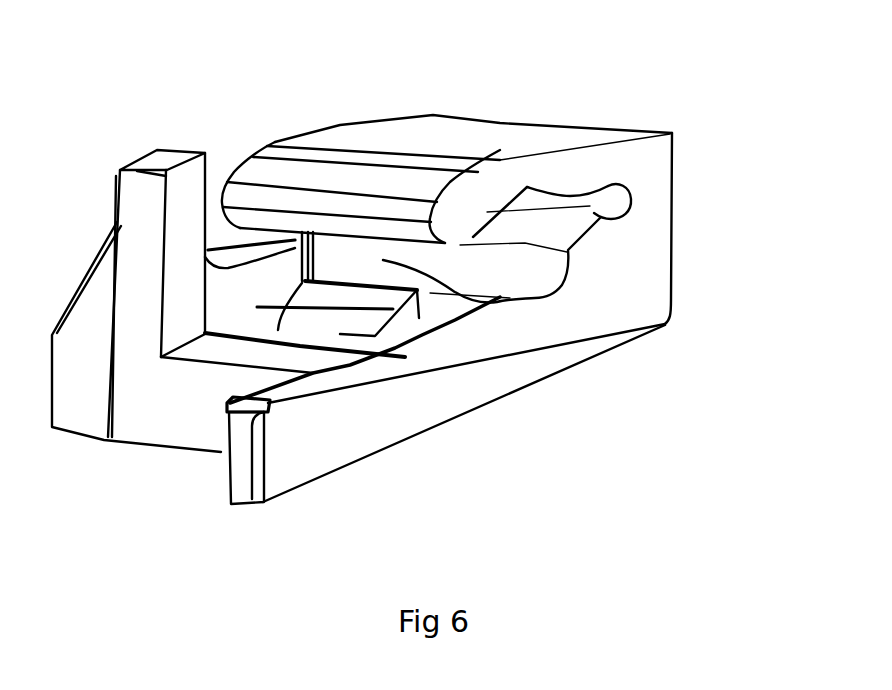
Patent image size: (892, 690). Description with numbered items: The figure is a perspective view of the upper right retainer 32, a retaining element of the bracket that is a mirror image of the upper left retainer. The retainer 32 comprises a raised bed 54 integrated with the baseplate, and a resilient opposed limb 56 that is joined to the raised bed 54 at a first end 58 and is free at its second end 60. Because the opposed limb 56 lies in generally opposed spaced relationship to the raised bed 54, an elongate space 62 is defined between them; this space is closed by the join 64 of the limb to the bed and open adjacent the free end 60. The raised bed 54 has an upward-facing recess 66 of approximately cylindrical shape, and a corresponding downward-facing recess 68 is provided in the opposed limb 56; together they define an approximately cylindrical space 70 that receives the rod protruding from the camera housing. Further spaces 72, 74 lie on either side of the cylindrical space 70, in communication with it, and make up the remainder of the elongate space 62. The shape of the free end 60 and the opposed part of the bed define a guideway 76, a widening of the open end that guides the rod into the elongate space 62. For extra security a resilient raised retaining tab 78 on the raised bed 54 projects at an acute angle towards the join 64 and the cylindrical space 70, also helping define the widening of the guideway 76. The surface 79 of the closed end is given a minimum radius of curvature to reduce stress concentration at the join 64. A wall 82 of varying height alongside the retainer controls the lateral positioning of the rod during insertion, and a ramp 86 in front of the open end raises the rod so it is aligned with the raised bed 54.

The upper right retainer 32 is at (262, 73).
The raised bed 54 is at (502, 366).
The opposed limb 56 is at (574, 168).
The first end 58 is at (657, 160).
The free end 60 is at (327, 200).
The elongate space 62 is at (537, 230).
The join 64 is at (652, 195).
The upward-facing recess 66 is at (540, 273).
The downward-facing recess 68 is at (525, 187).
The cylindrical space 70 is at (525, 242).
The further space 72 is at (633, 203).
The further space 74 is at (488, 278).
The guideway 76 is at (468, 273).
The raised retaining tab 78 is at (360, 300).
The surface of the closed end 79 is at (648, 218).
The wall 82 is at (183, 223).
The ramp 86 is at (304, 429).